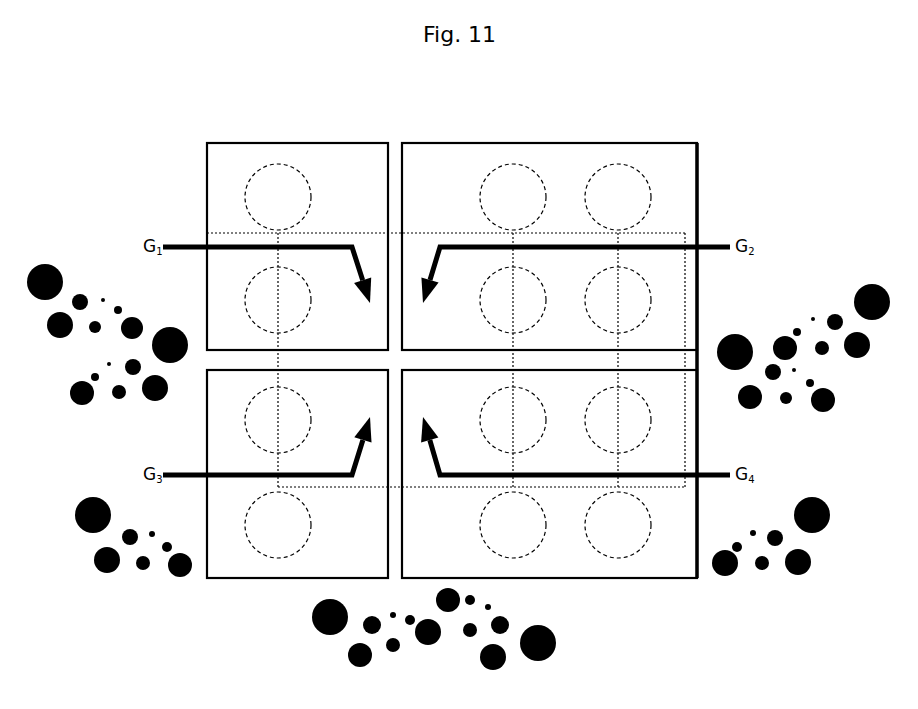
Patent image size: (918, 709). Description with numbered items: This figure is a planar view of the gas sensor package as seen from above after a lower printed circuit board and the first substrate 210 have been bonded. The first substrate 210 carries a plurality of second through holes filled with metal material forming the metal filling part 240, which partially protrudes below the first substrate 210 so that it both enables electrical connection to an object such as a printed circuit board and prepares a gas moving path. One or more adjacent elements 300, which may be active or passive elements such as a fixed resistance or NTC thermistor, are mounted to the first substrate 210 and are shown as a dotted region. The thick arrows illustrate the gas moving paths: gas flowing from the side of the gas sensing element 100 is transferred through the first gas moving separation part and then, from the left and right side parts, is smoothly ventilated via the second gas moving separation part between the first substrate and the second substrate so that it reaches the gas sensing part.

The gas sensing element 100 is at (421, 233).
The first substrate 210 is at (700, 268).
The metal filling part 240 is at (650, 192).
The adjacent elements 300 is at (686, 425).